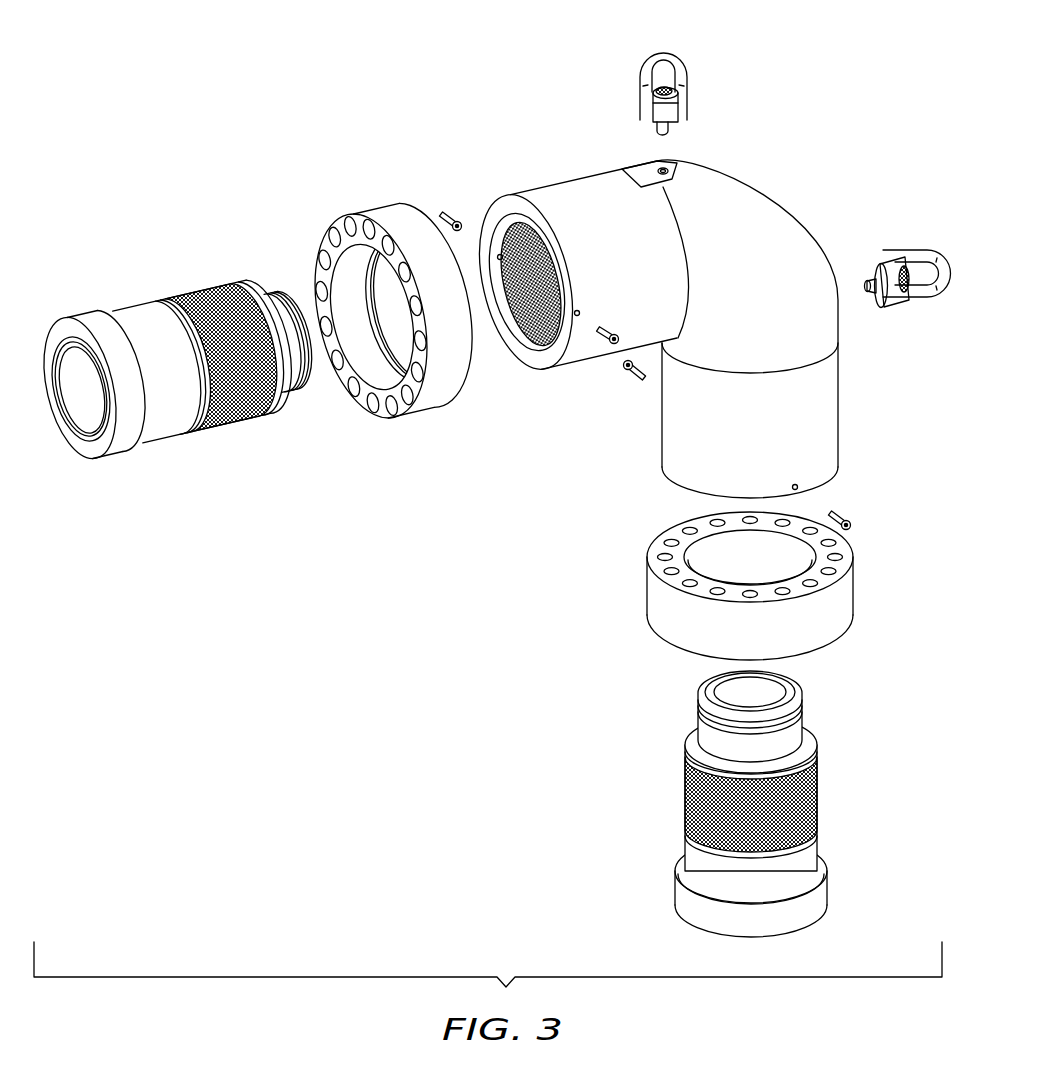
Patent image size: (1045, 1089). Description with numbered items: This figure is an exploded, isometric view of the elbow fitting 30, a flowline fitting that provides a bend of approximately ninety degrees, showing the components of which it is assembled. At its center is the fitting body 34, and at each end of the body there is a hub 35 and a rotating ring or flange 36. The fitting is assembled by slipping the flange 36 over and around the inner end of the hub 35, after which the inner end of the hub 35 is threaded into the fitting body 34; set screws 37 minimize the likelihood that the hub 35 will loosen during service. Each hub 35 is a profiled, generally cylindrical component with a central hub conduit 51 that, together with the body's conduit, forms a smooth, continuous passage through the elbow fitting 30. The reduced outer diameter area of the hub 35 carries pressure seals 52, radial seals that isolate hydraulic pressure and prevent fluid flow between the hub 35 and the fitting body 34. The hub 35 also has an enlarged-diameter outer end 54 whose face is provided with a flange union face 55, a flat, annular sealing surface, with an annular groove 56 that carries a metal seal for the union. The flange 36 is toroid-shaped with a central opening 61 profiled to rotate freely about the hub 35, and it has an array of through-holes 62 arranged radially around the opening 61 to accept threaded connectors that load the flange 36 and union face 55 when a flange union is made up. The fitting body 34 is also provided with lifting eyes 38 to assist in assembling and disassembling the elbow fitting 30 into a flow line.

The elbow fitting 30 is at (202, 86).
The fitting body 34 is at (773, 214).
The hub 35 is at (162, 420).
The rotating ring or flange 36 is at (384, 216).
The set screws 37 is at (456, 212).
The lifting eyes 38 is at (678, 52).
The hub conduit 51 is at (80, 388).
The pressure seals 52 is at (273, 297).
The enlarged-diameter outer end 54 is at (87, 320).
The flange union face 55 is at (58, 345).
The annular groove 56 is at (85, 437).
The central opening 61 is at (350, 268).
The through-holes 62 is at (364, 404).